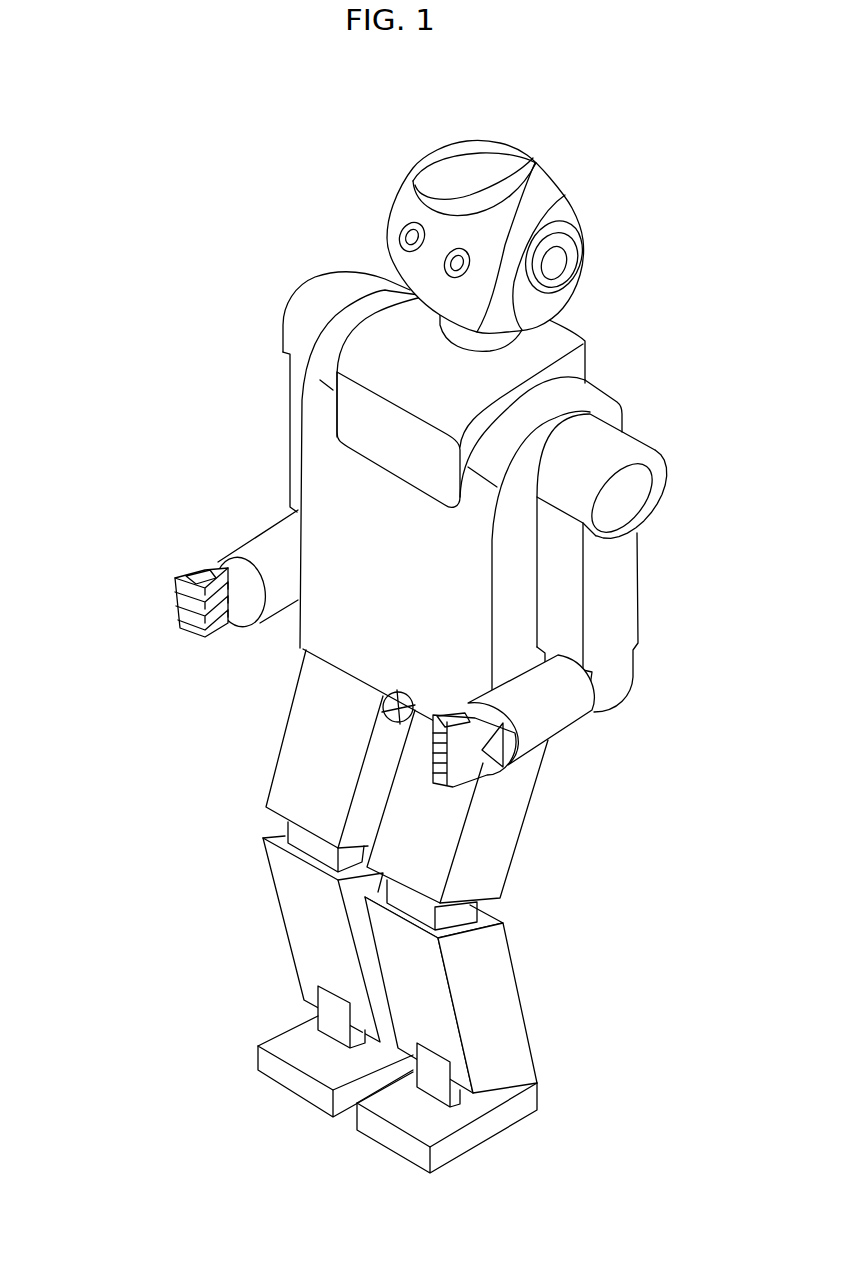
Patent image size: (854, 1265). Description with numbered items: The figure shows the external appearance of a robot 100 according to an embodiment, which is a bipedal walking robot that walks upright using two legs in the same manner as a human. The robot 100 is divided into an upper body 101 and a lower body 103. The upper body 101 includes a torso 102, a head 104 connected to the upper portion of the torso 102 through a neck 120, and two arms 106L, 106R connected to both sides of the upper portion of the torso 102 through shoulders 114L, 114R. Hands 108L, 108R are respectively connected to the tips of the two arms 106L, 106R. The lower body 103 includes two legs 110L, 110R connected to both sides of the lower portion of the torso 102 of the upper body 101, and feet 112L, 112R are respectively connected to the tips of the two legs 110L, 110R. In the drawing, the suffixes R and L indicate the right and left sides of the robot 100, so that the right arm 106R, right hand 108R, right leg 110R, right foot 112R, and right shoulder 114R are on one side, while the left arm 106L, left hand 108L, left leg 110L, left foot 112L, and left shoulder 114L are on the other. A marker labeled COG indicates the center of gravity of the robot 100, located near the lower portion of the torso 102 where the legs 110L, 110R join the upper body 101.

The robot 100 is at (385, 106).
The upper body 101 is at (186, 374).
The torso 102 is at (333, 483).
The lower body 103 is at (236, 818).
The head 104 is at (396, 208).
The right arm 106R is at (242, 552).
The left arm 106L is at (617, 665).
The right hand 108R is at (175, 604).
The left hand 108L is at (475, 768).
The right leg 110R is at (290, 916).
The left leg 110L is at (505, 997).
The right foot 112R is at (265, 1063).
The left foot 112L is at (480, 1130).
The right shoulder 114R is at (307, 303).
The left shoulder 114L is at (627, 442).
The neck 120 is at (506, 338).
The center of gravity COG is at (383, 703).